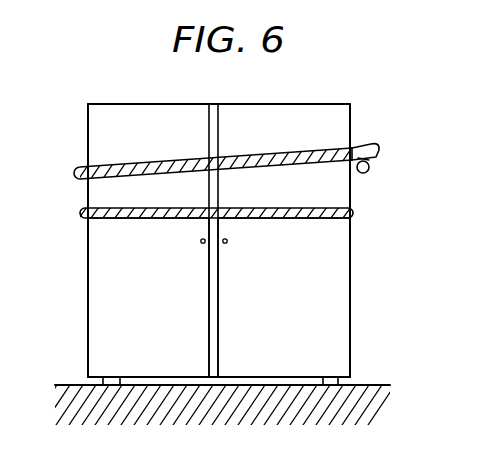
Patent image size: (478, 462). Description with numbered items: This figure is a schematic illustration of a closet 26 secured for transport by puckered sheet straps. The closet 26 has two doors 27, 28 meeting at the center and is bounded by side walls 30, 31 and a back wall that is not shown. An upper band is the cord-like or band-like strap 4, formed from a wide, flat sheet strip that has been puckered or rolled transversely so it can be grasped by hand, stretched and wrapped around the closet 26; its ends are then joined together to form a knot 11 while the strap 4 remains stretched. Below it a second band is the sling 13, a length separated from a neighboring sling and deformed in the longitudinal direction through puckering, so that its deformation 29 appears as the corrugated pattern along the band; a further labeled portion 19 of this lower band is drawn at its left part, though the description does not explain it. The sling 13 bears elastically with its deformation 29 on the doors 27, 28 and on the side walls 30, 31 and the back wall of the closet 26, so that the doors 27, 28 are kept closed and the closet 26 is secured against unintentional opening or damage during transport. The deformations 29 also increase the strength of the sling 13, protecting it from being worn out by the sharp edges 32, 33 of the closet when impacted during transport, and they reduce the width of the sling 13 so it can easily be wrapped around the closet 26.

The strap 4 is at (265, 160).
The knot 11 is at (368, 172).
The sling 13 is at (312, 221).
The lower strap 19 is at (150, 221).
The closet 26 is at (340, 353).
The door 27 is at (270, 326).
The door 28 is at (136, 326).
The deformation 29 is at (255, 221).
The side wall 30 is at (88, 244).
The side wall 31 is at (352, 247).
The sharp edge 32 is at (352, 262).
The sharp edge 33 is at (88, 290).